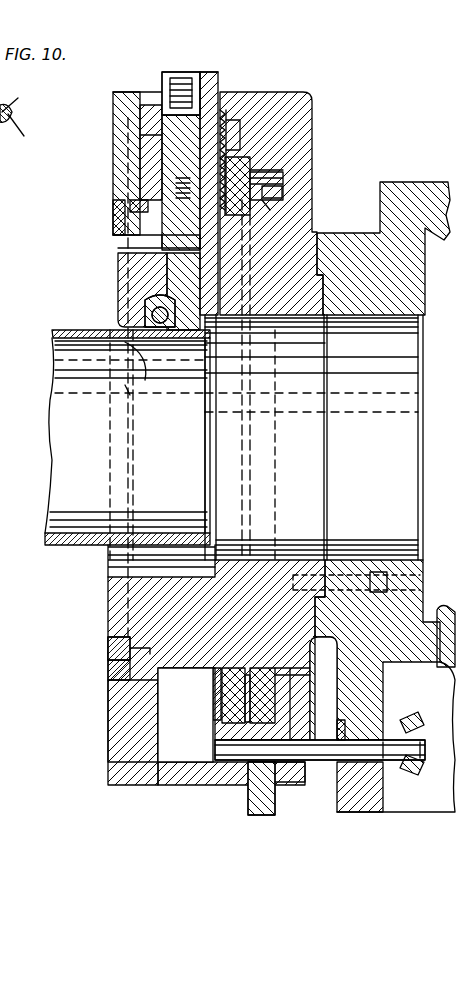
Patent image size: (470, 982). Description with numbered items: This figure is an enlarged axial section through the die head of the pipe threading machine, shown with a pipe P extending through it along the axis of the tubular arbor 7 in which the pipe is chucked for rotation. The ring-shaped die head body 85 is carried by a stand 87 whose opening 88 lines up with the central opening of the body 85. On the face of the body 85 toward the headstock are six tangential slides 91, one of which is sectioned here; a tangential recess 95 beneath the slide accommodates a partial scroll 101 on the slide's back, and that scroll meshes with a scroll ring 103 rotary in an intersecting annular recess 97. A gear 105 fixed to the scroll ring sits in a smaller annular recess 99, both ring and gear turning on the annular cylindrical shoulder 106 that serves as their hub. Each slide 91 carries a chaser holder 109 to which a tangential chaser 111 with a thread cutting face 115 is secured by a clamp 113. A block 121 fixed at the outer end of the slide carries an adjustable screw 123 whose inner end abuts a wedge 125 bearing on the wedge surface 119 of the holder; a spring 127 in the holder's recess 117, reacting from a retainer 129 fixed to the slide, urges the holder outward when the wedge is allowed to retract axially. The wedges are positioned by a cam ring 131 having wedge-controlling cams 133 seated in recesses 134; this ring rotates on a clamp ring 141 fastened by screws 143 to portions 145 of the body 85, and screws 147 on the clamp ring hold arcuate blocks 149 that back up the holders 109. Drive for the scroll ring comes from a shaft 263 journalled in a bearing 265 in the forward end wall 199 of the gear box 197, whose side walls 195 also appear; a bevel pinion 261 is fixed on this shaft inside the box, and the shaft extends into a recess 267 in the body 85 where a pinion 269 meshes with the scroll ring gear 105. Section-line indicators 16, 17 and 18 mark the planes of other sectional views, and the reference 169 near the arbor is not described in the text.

The tubular arbor 7 is at (5, 158).
The section line 16 is at (112, 118).
The section line 17 is at (140, 33).
The section line 18 is at (16, 108).
The die head body 85 is at (292, 92).
The stand 87 is at (405, 182).
The opening 88 is at (355, 558).
The slides 91 is at (218, 78).
The tangential recess 95 is at (228, 112).
The annular recess 97 is at (250, 162).
The annular recess of smaller diameter 99 is at (290, 166).
The partial scrolls 101 is at (232, 140).
The scroll ring 103 is at (248, 150).
The gear 105 is at (285, 192).
The annular cylindrical shoulder 106 is at (272, 212).
The chaser holder 109 is at (118, 256).
The tangential chaser 111 is at (152, 318).
The clamp 113 is at (145, 302).
The thread cutting face 115 is at (142, 370).
The recess 117 is at (170, 280).
The wedge surface 119 is at (162, 152).
The block 121 is at (208, 76).
The screw 123 is at (178, 68).
The wedge 125 is at (140, 138).
The spring 127 is at (176, 186).
The retainer 129 is at (130, 204).
The cam ring 131 is at (113, 122).
The wedge-controlling cams 133 is at (150, 110).
The recesses 134 is at (126, 100).
The clamp ring 141 is at (113, 212).
The screws 143 is at (108, 650).
The portions of the body 145 is at (108, 610).
The screws 147 is at (108, 224).
The arcuate blocks 149 is at (130, 243).
The line 169 is at (17, 134).
The side walls 195 is at (428, 805).
The box 197 is at (445, 596).
The forward end wall 199 is at (378, 687).
The bevel pinion 261 is at (422, 704).
The shaft 263 is at (215, 748).
The bearing 265 is at (400, 785).
The recess 267 is at (226, 785).
The pinion 269 is at (275, 800).
The pipe P is at (48, 538).